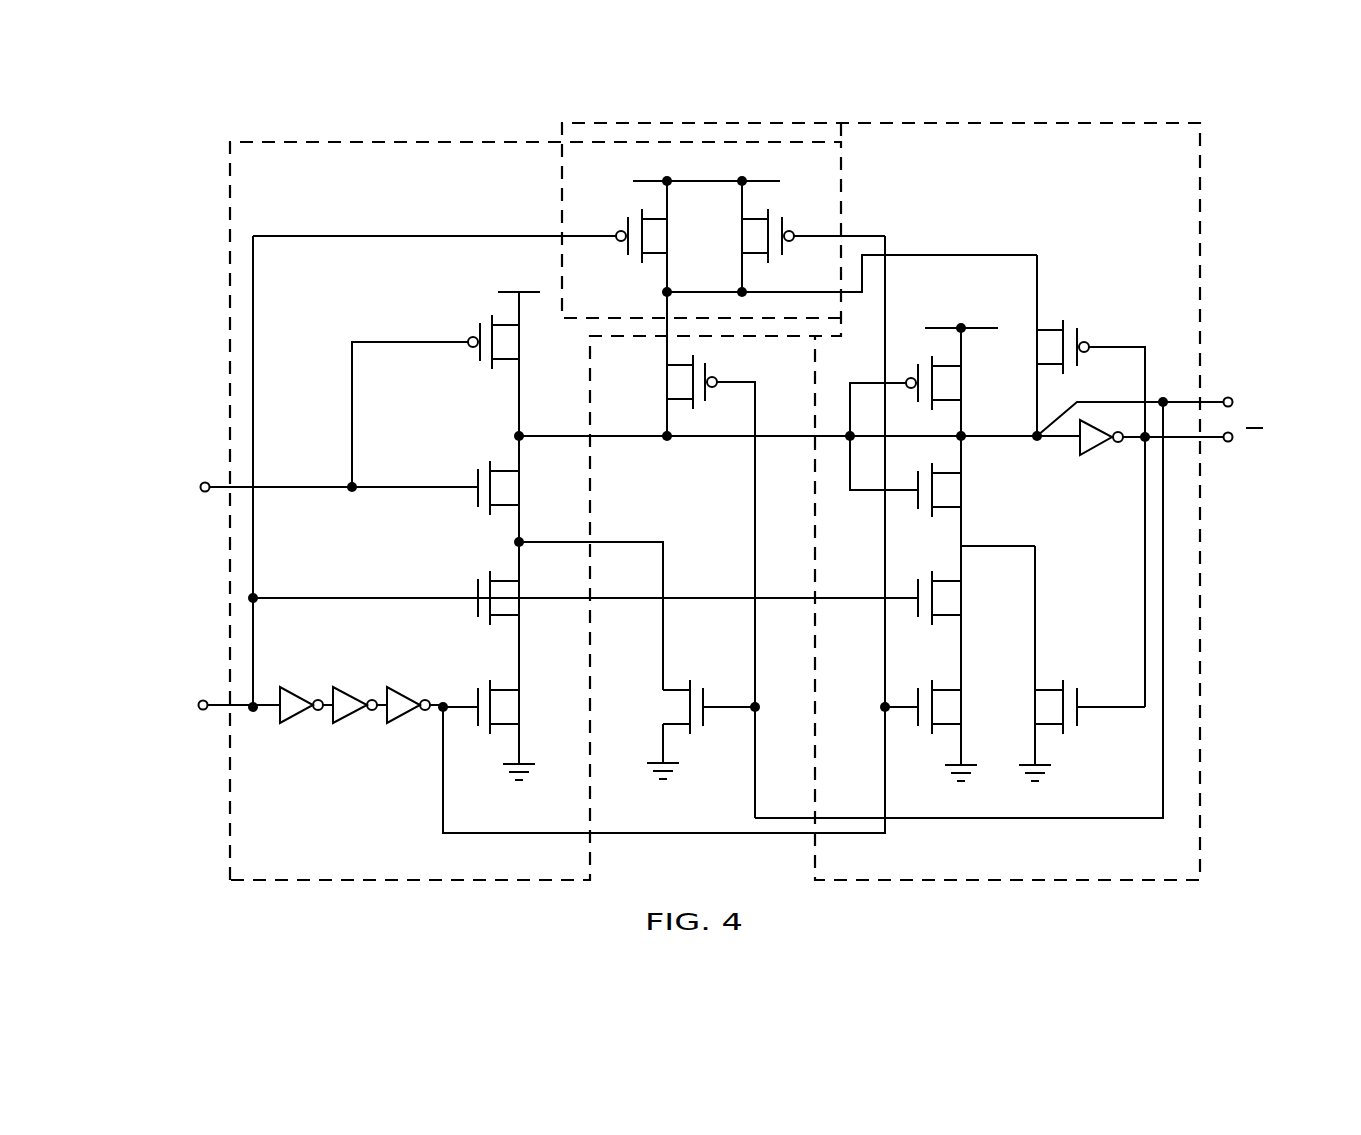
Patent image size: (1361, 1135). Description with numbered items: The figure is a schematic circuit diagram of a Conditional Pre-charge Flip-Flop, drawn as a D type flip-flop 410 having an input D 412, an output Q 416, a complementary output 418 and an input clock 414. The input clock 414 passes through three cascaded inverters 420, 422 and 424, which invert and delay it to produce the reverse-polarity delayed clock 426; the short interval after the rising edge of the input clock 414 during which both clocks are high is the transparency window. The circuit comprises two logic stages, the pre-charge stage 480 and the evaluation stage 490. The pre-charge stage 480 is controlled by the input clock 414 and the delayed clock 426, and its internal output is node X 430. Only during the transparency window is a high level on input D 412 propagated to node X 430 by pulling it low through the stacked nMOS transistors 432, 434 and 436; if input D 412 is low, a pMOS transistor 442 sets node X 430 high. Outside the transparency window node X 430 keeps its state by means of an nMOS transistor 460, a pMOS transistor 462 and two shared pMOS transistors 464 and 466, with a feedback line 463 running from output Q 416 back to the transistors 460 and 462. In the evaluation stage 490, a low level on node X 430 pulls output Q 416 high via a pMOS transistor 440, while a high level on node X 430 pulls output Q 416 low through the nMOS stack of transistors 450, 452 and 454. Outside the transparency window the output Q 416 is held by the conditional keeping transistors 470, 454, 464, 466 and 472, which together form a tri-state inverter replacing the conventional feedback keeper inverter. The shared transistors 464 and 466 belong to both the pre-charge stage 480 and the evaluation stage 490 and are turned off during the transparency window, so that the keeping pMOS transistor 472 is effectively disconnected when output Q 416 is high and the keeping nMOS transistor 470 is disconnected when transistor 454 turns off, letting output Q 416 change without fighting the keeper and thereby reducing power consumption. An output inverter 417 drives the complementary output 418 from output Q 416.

The D type flip-flop 410 is at (1240, 116).
The input D 412 is at (184, 472).
The clock CLK0 414 is at (160, 688).
The output Q 416 is at (1252, 396).
The inverter inv4 417 is at (1103, 492).
The output Qbar 418 is at (1270, 442).
The inverter inv1 420 is at (295, 764).
The inverter inv2 422 is at (333, 648).
The inverter inv3 424 is at (396, 764).
The clock CLK3 426 is at (673, 818).
The node X 430 is at (781, 408).
The transistor Mn1 432 is at (464, 648).
The transistor Mn2 434 is at (449, 540).
The transistor Mn3 436 is at (447, 433).
The transistor Mp5 440 is at (992, 386).
The transistor Mp1 442 is at (424, 310).
The transistor Mn5 450 is at (990, 703).
The transistor Mn6 452 is at (990, 598).
The transistor Mn7 454 is at (988, 493).
The transistor Mn4 460 is at (712, 652).
The transistor Mp2 462 is at (638, 381).
The feedback line 463 is at (988, 820).
The transistor Mp3 464 is at (612, 188).
The transistor Mp4 466 is at (803, 193).
The transistor Mn8 470 is at (1093, 664).
The transistor Mp6 472 is at (1098, 299).
The pre-charge stage 480 is at (380, 140).
The evaluation stage 490 is at (957, 123).